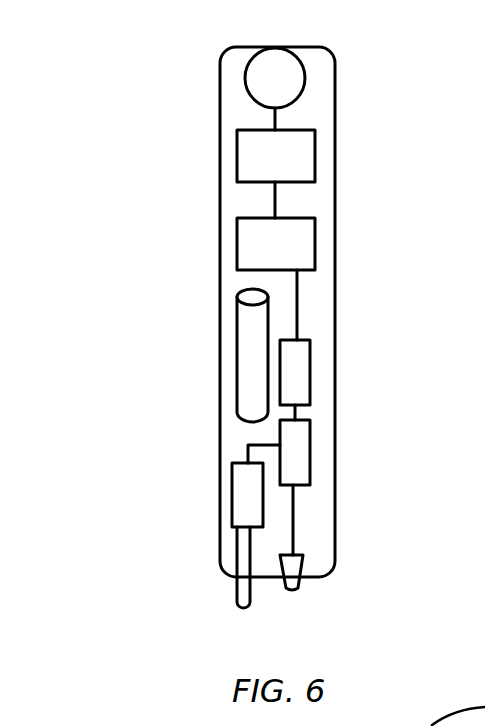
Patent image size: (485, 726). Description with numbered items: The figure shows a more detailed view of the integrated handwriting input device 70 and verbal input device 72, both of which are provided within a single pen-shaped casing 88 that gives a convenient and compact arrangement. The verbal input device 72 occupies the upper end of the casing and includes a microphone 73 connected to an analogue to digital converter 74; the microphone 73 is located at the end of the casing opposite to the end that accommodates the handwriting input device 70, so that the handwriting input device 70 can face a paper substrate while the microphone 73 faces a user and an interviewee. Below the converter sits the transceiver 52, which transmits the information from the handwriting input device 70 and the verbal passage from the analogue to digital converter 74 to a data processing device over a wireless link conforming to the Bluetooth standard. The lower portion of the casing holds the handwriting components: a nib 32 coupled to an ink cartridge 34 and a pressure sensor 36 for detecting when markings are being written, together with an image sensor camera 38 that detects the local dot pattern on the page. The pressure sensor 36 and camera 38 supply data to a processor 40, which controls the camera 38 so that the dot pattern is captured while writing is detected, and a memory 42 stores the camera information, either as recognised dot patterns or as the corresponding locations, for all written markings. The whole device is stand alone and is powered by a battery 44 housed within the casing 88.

The nib 32 is at (237, 588).
The ink cartridge 34 is at (245, 509).
The pressure sensor 36 is at (248, 483).
The image sensor camera 38 is at (302, 578).
The processor 40 is at (310, 470).
The memory 42 is at (310, 388).
The battery 44 is at (257, 382).
The transceiver 52 is at (238, 255).
The handwriting input device 70 is at (136, 416).
The verbal input device 72 is at (148, 78).
The microphone 73 is at (245, 78).
The analogue to digital converter 74 is at (238, 170).
The pen-shaped casing 88 is at (335, 158).